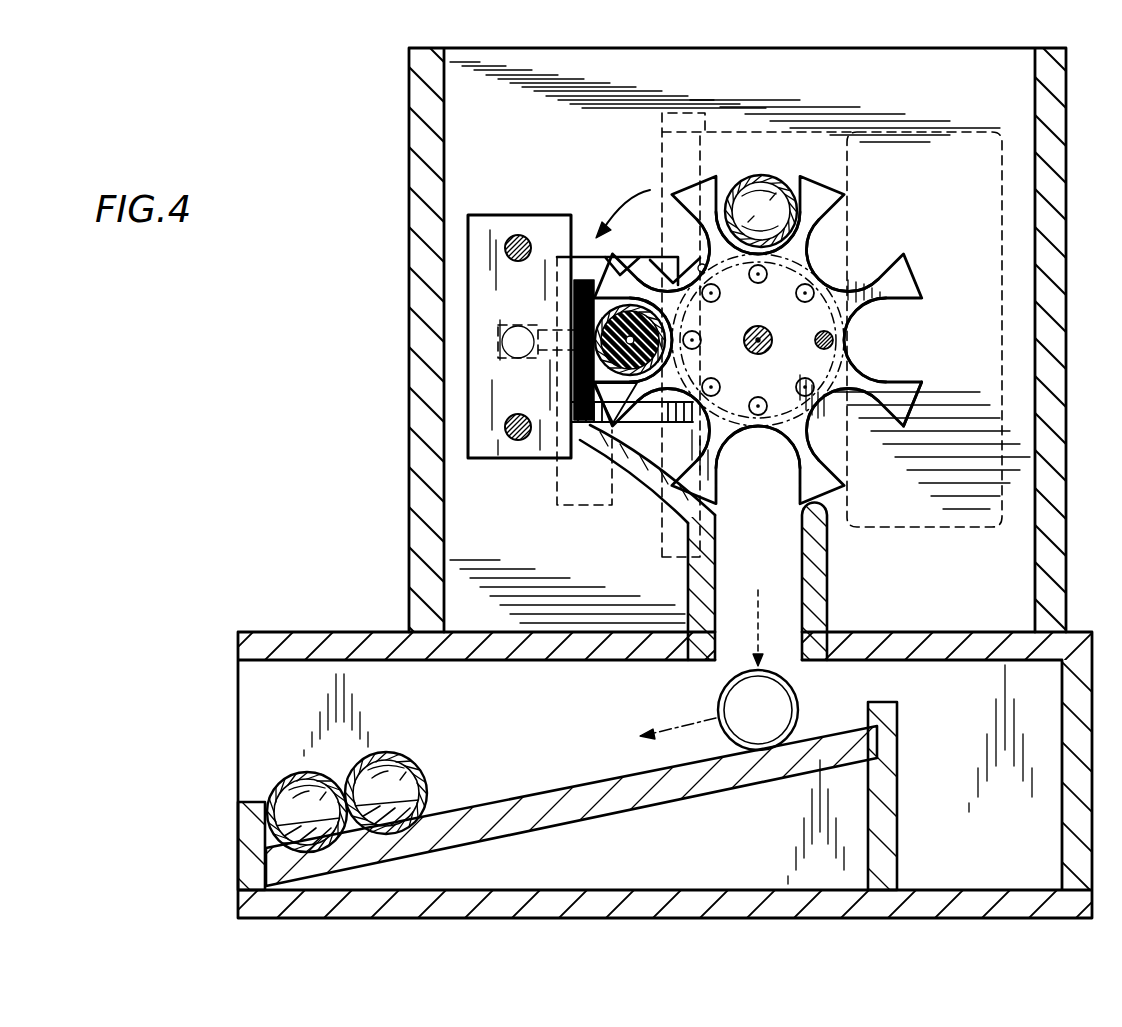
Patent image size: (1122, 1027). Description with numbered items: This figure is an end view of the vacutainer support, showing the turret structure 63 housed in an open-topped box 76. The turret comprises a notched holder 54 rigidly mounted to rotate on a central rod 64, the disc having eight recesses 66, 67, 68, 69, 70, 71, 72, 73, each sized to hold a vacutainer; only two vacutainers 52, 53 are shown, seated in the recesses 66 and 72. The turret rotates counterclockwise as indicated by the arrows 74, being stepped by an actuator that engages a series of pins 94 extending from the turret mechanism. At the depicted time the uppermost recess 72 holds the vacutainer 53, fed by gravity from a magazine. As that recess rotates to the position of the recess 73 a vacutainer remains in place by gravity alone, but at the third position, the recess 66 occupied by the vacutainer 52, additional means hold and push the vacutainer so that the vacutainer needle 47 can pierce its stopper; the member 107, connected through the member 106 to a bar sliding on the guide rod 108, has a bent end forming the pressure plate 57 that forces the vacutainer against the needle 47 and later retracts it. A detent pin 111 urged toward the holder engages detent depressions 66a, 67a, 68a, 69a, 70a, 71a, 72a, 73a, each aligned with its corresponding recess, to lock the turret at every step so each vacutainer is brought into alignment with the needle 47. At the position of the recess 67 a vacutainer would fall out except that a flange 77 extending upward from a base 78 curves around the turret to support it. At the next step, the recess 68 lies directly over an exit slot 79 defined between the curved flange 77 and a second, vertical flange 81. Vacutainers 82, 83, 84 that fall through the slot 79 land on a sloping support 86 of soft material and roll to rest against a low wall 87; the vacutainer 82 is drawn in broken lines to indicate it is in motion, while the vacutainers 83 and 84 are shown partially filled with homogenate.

The vacutainer needle 47 is at (572, 378).
The vacutainer 52 is at (597, 306).
The vacutainer 53 is at (760, 176).
The holder 54 is at (913, 395).
The pressure plate 57 is at (660, 280).
The turret structure 63 is at (926, 270).
The central rod 64 is at (757, 356).
The recess 66 is at (573, 272).
The detent depression 66a is at (701, 340).
The recess 67 is at (614, 426).
The detent depression 67a is at (736, 398).
The recess 68 is at (727, 474).
The detent depression 68a is at (758, 416).
The recess 69 is at (870, 402).
The detent depression 69a is at (804, 378).
The recess 70 is at (903, 298).
The detent depression 70a is at (812, 300).
The recess 71 is at (833, 205).
The detent depression 71a is at (761, 284).
The recess 72 is at (797, 186).
The detent depression 72a is at (716, 301).
The recess 73 is at (663, 208).
The detent depression 73a is at (699, 264).
The arrows 74 is at (616, 191).
The open-topped box 76 is at (416, 62).
The flange 77 is at (697, 584).
The base 78 is at (516, 630).
The exit slot 79 is at (806, 558).
The vertical flange 81 is at (822, 608).
The vacutainer 82 is at (726, 692).
The vacutainer 83 is at (414, 766).
The vacutainer 84 is at (312, 776).
The sloping support 86 is at (577, 795).
The low wall 87 is at (247, 822).
The pins 94 is at (808, 402).
The member 106 is at (477, 462).
The member 107 is at (573, 392).
The guide rod 108 is at (515, 237).
The detent pin 111 is at (836, 346).